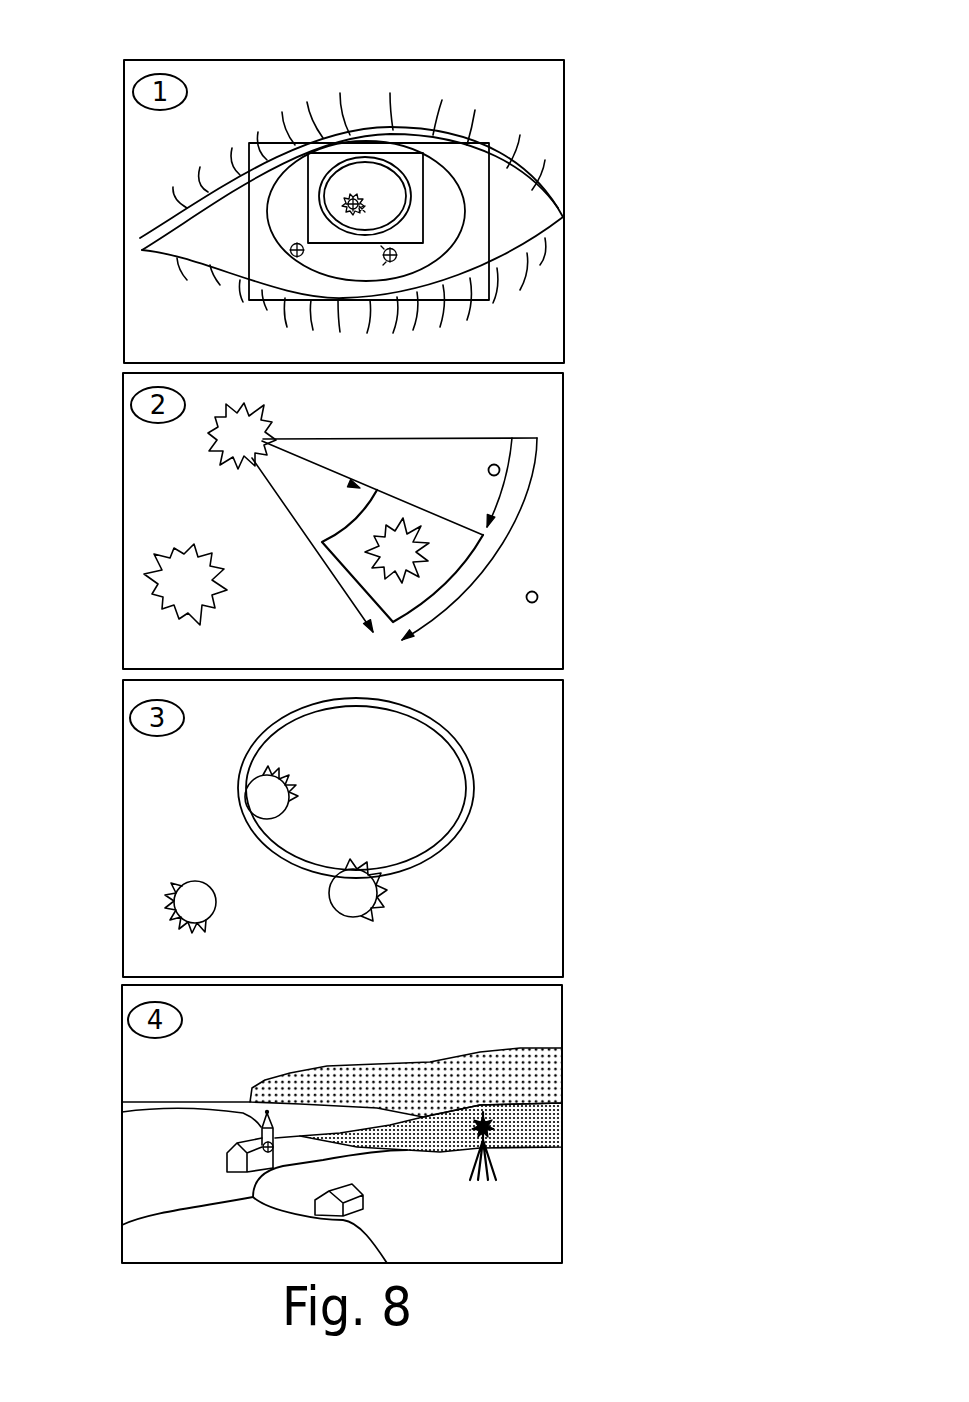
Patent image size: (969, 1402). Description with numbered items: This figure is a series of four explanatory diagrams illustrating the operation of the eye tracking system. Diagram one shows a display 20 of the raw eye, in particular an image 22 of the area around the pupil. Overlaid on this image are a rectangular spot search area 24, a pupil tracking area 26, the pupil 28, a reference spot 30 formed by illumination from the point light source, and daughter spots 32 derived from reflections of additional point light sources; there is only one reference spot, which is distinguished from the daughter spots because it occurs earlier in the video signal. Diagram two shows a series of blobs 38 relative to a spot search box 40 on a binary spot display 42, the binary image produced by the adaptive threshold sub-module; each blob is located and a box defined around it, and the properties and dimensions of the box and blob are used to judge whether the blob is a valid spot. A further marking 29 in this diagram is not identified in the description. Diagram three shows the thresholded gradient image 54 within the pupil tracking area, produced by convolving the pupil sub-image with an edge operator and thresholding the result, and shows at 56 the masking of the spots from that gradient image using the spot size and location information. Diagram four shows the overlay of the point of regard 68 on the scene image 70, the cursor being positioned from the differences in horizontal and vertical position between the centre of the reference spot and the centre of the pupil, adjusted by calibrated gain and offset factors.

The display 20 is at (459, 88).
The image 22 is at (360, 167).
The rectangular spot search area 24 is at (492, 223).
The pupil tracking area 26 is at (424, 201).
The pupil 28 is at (400, 172).
The reference spot 30 is at (362, 209).
The daughter spots 32 is at (396, 257).
The blobs 38 is at (172, 594).
The spot search box 40 is at (482, 545).
The binary spot display 42 is at (543, 402).
The direction vector 29 is at (372, 488).
The thresholded gradient image 54 is at (588, 720).
The masked spots 56 is at (263, 792).
The point of regard 68 is at (277, 1149).
The scene image 70 is at (562, 1013).